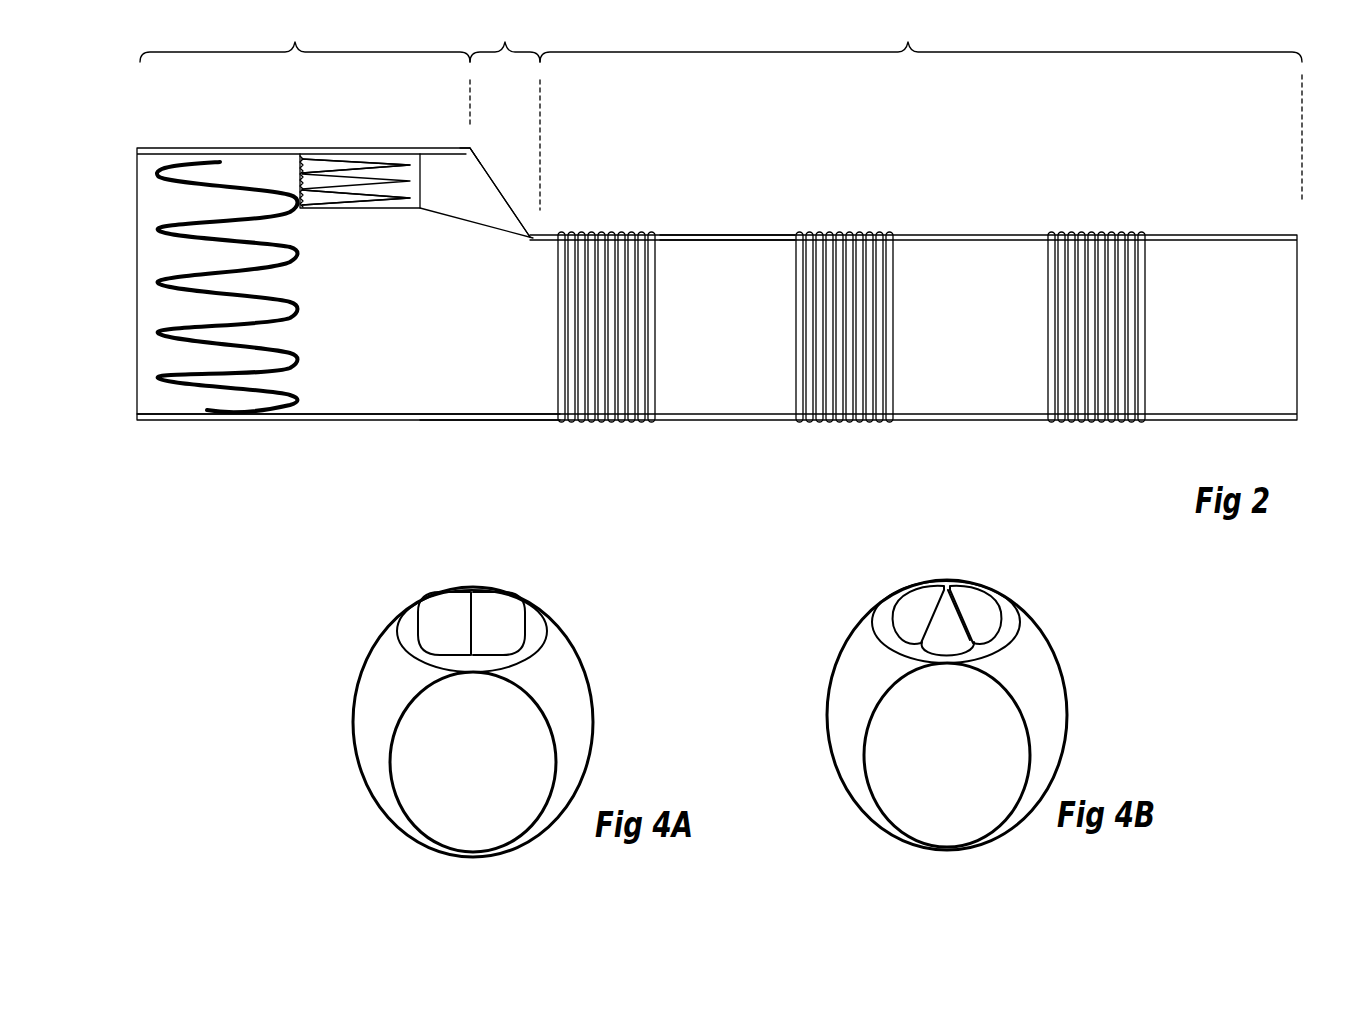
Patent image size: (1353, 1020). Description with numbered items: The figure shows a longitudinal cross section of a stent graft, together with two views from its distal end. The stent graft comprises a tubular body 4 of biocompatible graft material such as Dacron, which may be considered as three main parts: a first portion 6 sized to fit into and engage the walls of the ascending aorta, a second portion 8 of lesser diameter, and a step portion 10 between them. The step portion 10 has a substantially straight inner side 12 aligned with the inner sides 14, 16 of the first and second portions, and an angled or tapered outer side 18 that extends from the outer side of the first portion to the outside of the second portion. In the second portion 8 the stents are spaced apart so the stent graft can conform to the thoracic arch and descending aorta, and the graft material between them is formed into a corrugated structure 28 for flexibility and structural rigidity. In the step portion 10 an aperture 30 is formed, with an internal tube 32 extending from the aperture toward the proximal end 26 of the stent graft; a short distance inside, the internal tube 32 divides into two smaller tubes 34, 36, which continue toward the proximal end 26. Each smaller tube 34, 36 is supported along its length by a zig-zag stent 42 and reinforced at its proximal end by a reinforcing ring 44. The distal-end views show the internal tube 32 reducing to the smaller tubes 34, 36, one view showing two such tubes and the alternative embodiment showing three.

In FIG. 2, the tubular body 4 is at (710, 240).
In FIG. 2, the first portion 6 is at (305, 37).
In FIG. 4A, the first portion 6 is at (353, 712).
In FIG. 4B, the first portion 6 is at (827, 702).
In FIG. 2, the second portion 8 is at (921, 35).
In FIG. 4A, the second portion 8 is at (370, 793).
In FIG. 4B, the second portion 8 is at (843, 783).
In FIG. 2, the step portion 10 is at (505, 37).
In FIG. 2, the inner side 12 is at (500, 405).
In FIG. 2, the inner side 14 is at (313, 405).
In FIG. 2, the inner side 16 is at (673, 405).
In FIG. 2, the outer side 18 is at (475, 152).
In FIG. 2, the proximal end 26 is at (121, 371).
In FIG. 2, the corrugated structure 28 is at (845, 372).
In FIG. 2, the aperture 30 is at (503, 192).
In FIG. 4A, the aperture 30 is at (413, 653).
In FIG. 4B, the aperture 30 is at (880, 647).
In FIG. 2, the internal tube 32 is at (457, 183).
In FIG. 4A, the internal tube 32 is at (532, 648).
In FIG. 4B, the internal tube 32 is at (1003, 640).
In FIG. 2, the smaller tube 34 is at (362, 209).
In FIG. 4A, the smaller tube 34 is at (530, 625).
In FIG. 4B, the smaller tube 34 is at (983, 602).
In FIG. 2, the smaller tube 36 is at (356, 232).
In FIG. 4A, the smaller tube 36 is at (413, 618).
In FIG. 4B, the smaller tube 36 is at (897, 602).
In FIG. 2, the zig-zag stent 42 is at (382, 183).
In FIG. 2, the reinforcing ring 44 is at (296, 177).